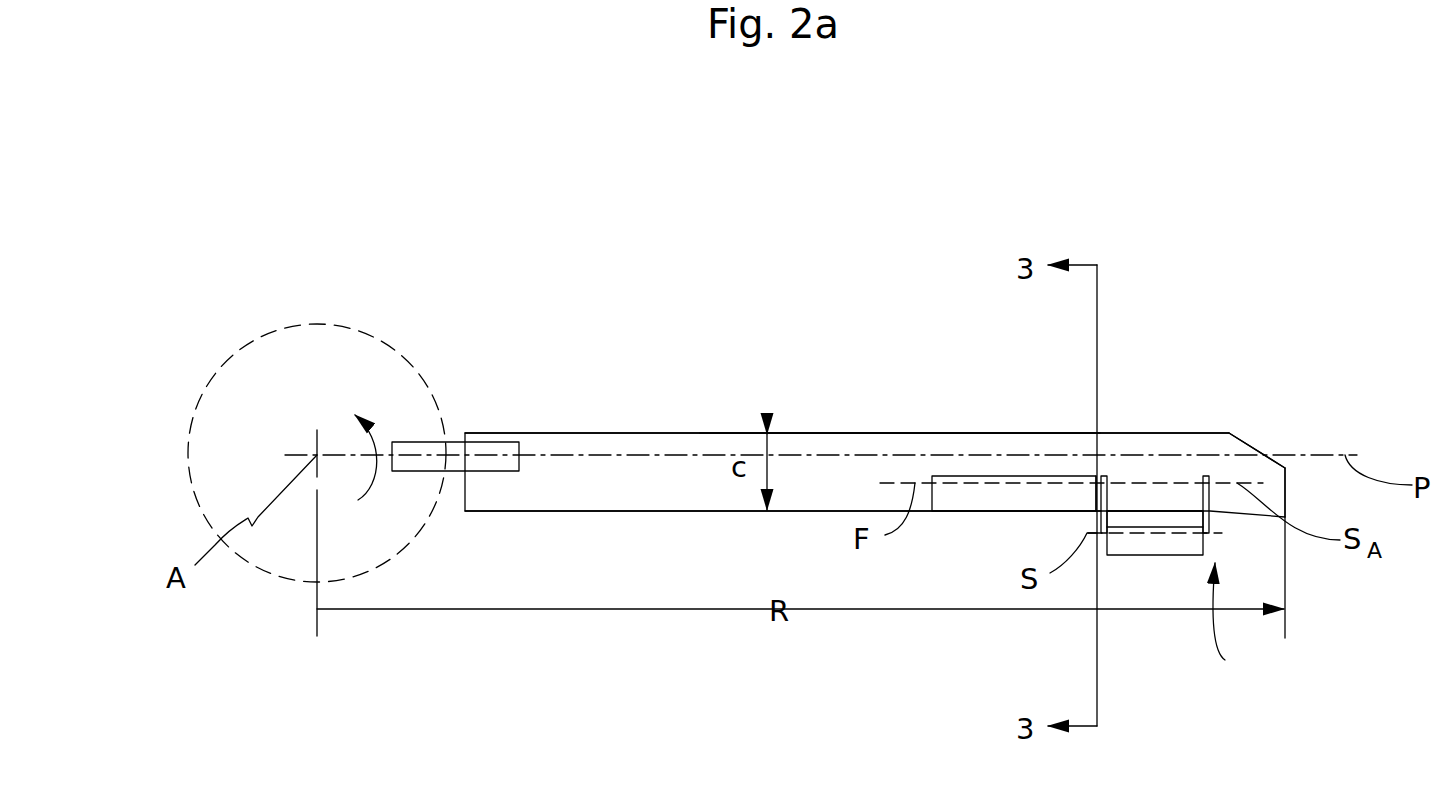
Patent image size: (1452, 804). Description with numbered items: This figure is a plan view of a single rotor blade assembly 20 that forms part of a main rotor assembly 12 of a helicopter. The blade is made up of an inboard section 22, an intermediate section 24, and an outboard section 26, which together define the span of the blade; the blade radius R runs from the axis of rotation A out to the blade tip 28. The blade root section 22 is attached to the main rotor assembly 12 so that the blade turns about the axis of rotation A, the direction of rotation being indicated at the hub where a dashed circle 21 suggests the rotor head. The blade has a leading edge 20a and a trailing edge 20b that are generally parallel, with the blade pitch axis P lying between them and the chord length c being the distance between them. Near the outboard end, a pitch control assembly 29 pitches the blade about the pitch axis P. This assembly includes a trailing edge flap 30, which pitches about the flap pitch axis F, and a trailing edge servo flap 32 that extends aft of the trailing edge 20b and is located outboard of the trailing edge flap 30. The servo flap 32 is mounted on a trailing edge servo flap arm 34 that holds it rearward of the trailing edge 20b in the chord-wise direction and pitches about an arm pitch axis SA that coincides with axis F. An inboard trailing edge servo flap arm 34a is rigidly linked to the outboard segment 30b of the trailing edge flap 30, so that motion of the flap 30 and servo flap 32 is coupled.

The main rotor assembly 12 is at (342, 363).
The rotor blade assembly 20 is at (753, 402).
The leading edge 20a is at (548, 433).
The trailing edge 20b is at (548, 511).
The hub 21 is at (227, 362).
The inboard section 22 is at (485, 433).
The intermediate section 24 is at (922, 440).
The outboard section 26 is at (1210, 440).
The blade tip 28 is at (1290, 485).
The pitch control assembly 29 is at (1240, 625).
The trailing edge flap 30 is at (1015, 495).
The outboard segment 30b is at (1095, 490).
The trailing edge servo flap 32 is at (1175, 548).
The trailing edge servo flap arm 34 is at (1210, 523).
The inboard trailing edge servo flap arm 34a is at (1098, 522).